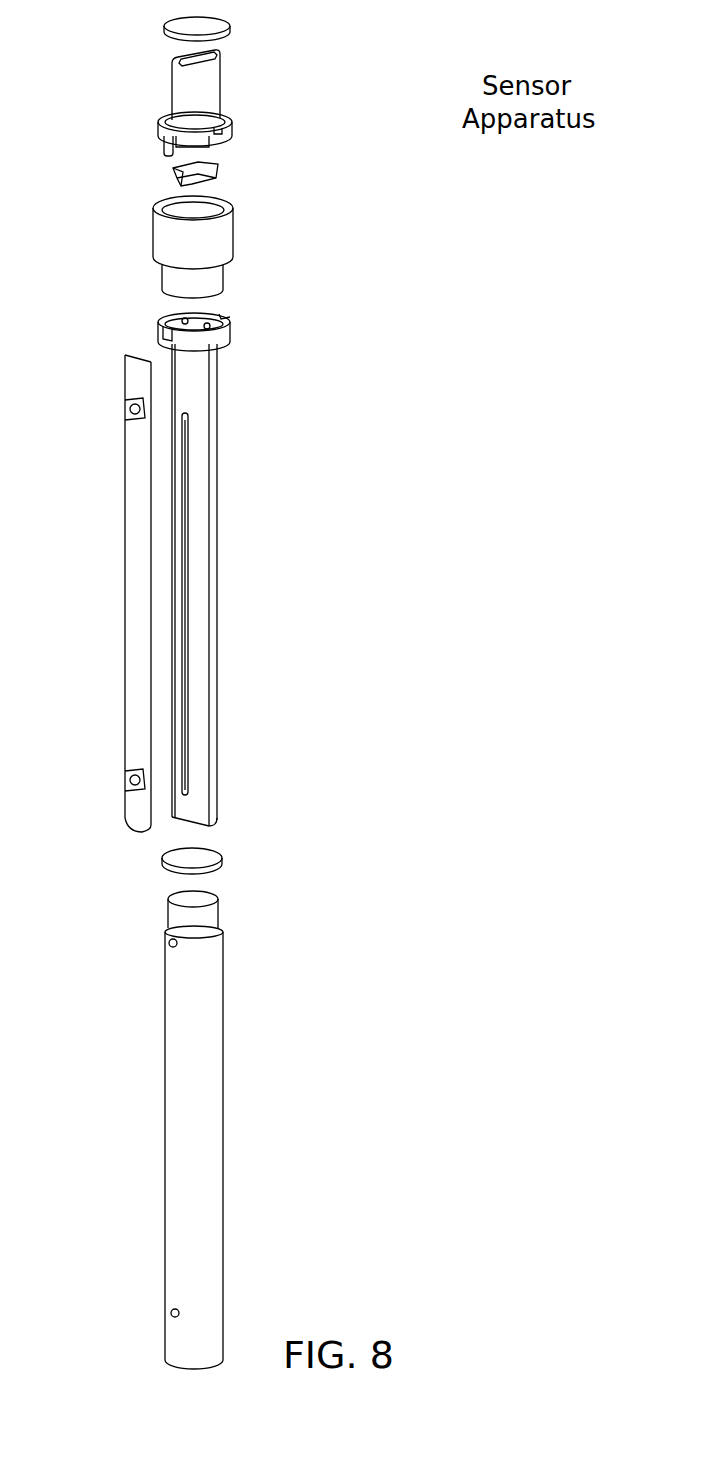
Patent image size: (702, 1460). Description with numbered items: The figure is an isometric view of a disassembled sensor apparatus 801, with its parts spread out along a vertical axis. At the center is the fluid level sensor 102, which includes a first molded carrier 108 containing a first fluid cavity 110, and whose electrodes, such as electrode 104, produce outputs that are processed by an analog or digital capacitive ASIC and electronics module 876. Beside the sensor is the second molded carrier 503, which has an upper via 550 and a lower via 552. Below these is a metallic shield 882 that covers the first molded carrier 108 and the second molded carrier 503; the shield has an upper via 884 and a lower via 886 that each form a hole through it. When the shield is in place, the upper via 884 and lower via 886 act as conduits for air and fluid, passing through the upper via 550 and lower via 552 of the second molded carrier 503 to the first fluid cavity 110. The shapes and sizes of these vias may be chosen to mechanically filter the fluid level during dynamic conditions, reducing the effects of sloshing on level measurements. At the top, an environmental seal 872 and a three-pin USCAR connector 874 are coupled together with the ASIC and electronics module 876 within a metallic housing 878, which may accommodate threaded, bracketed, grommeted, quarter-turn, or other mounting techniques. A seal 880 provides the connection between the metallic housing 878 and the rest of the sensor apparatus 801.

The sensor apparatus 801 is at (450, 177).
The environmental seal 872 is at (160, 28).
The 3-pin USCAR 120 connector 874 is at (202, 92).
The ASIC and electronics module 876 is at (220, 173).
The metallic housing 878 is at (212, 255).
The electrode 104 is at (172, 315).
The fluid level sensor 102 is at (198, 403).
The first molded carrier 108 is at (198, 520).
The first fluid cavity 110 is at (186, 607).
The second molded carrier 503 is at (140, 573).
The upper via 550 is at (127, 405).
The lower via 552 is at (125, 778).
The seal 880 is at (227, 865).
The metallic shield 882 is at (198, 1155).
The upper via 884 is at (165, 942).
The lower via 886 is at (167, 1313).